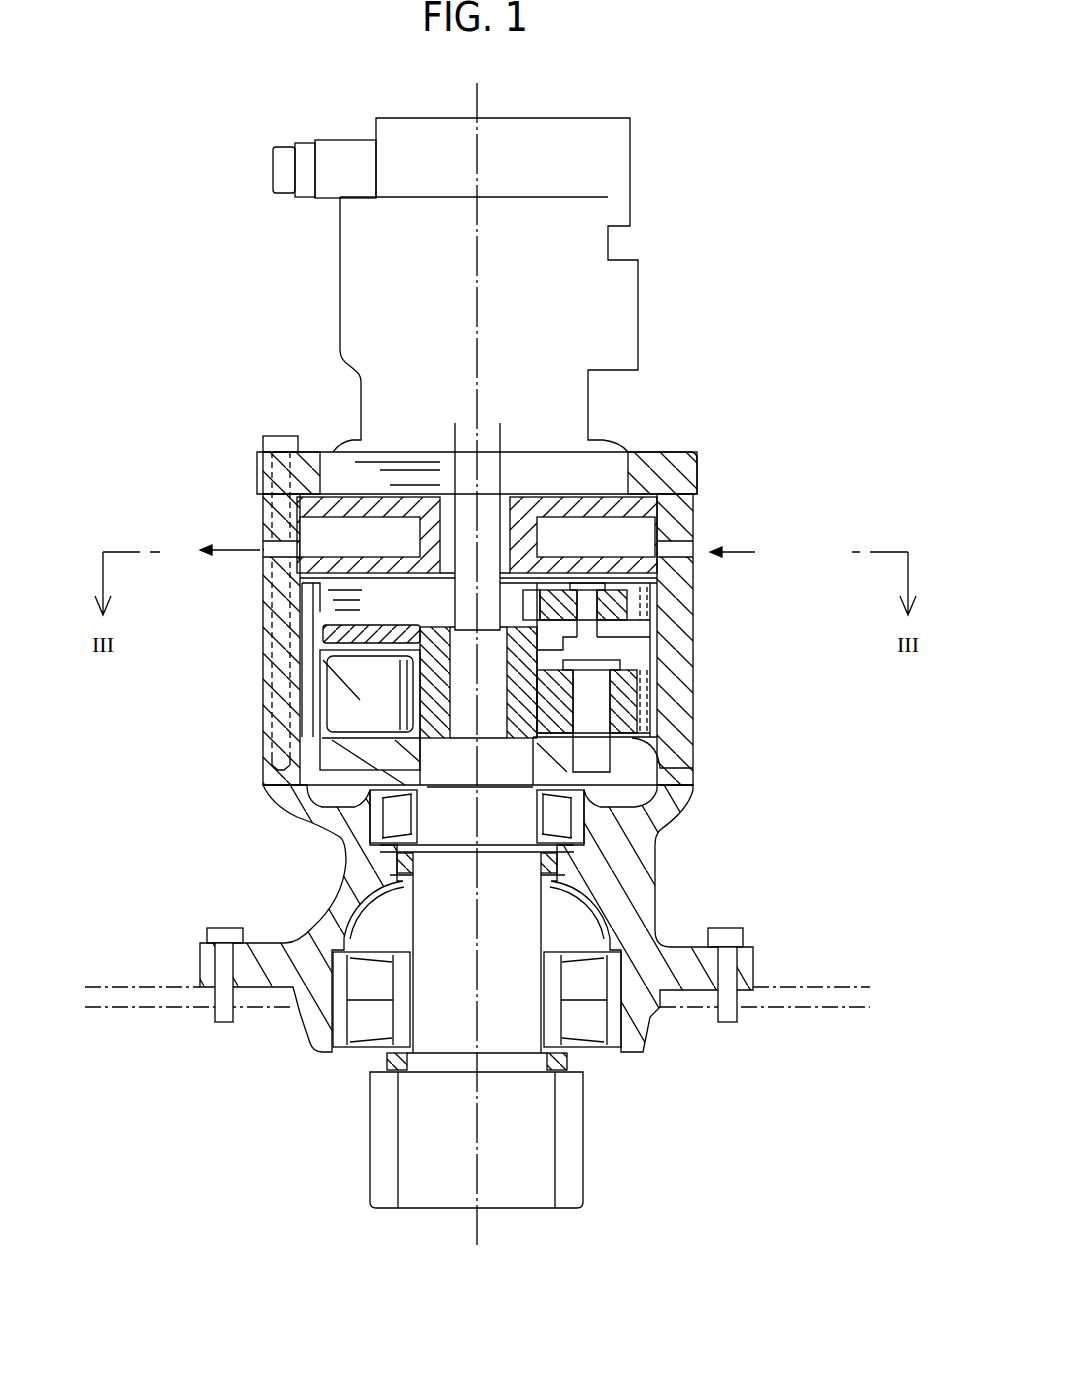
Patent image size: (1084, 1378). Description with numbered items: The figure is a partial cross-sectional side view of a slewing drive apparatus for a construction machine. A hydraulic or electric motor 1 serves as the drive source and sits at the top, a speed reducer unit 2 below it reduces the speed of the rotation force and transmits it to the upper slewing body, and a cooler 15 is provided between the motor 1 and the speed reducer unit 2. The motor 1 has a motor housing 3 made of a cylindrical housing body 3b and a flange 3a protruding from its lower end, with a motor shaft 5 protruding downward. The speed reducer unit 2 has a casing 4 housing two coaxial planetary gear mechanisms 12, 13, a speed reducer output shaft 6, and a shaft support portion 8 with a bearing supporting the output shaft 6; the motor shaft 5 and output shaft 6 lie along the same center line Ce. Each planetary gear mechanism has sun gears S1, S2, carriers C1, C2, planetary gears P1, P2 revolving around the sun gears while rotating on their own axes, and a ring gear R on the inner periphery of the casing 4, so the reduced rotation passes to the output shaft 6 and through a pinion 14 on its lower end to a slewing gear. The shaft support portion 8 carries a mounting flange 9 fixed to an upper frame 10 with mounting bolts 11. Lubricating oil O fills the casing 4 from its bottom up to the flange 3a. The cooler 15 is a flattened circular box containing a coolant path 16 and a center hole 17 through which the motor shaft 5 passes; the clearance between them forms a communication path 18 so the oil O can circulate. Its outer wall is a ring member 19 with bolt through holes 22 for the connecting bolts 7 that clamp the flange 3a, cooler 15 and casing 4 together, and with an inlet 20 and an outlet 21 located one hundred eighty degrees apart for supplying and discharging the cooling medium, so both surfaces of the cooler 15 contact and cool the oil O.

The center line Ce is at (480, 105).
The motor 1 is at (328, 294).
The speed reducer unit 2 is at (247, 687).
The motor housing 3 is at (640, 323).
The flange 3a is at (688, 451).
The housing body 3b is at (347, 425).
The casing 4 is at (262, 626).
The motor shaft 5 is at (500, 443).
The speed reducer output shaft 6 is at (343, 950).
The connecting bolts 7 is at (282, 434).
The shaft support portion 8 is at (655, 867).
The mounting flange 9 is at (753, 963).
The upper frame 10 is at (123, 987).
The mounting bolts 11 is at (222, 927).
The planetary gear mechanism 12 is at (705, 587).
The planetary gear mechanism 13 is at (705, 663).
The pinion 14 is at (583, 1165).
The cooler 15 is at (597, 486).
The coolant path 16 is at (347, 530).
The center hole 17 is at (503, 502).
The communication path 18 is at (443, 502).
The ring member 19 is at (265, 528).
The inlet 20 is at (687, 548).
The outlet 21 is at (263, 547).
The bolt through holes 22 is at (277, 244).
The lubricating oil O is at (390, 446).
The ring gear R is at (327, 612).
The sun gear S1 is at (420, 605).
The sun gear S2 is at (410, 710).
The carrier C1 is at (325, 628).
The carrier C2 is at (333, 770).
The planetary gears P1 is at (620, 588).
The planetary gears P2 is at (637, 737).